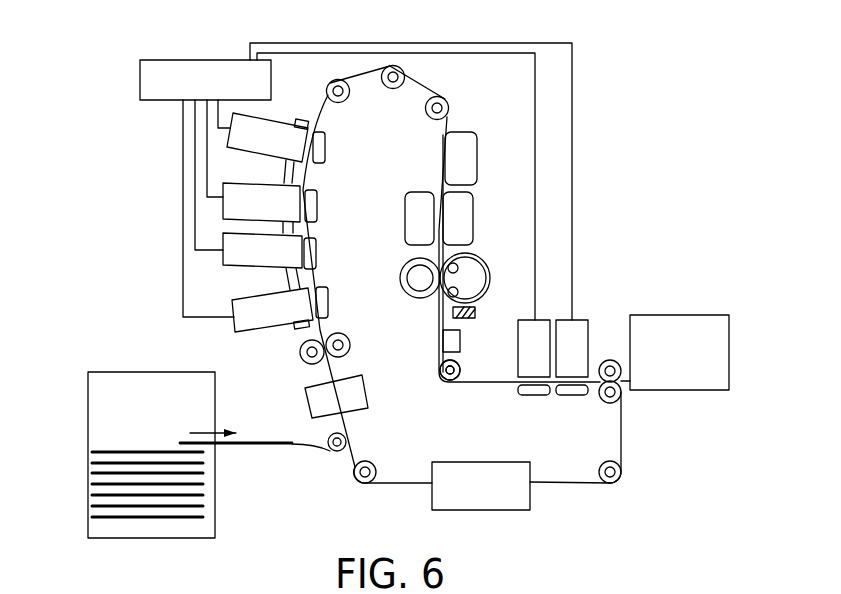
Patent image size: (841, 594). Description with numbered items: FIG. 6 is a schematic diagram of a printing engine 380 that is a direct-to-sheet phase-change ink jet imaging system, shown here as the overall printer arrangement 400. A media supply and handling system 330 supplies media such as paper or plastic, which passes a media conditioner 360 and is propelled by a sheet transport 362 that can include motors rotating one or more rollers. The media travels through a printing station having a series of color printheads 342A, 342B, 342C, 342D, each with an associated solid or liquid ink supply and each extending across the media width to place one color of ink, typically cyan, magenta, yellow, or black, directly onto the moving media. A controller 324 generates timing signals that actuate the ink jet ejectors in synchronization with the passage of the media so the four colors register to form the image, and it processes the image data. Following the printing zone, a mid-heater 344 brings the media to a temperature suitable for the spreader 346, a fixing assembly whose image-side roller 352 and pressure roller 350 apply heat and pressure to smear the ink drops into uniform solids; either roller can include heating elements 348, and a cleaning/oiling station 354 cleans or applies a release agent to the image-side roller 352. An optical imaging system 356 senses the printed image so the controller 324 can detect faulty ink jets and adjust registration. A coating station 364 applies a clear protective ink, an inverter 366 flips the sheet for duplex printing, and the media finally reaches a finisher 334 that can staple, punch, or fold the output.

The controller 324 is at (198, 60).
The media supply and handling system 330 is at (122, 372).
The finisher 334 is at (677, 315).
The printhead 342A is at (235, 325).
The printhead 342B is at (223, 264).
The printhead 342C is at (223, 213).
The printhead 342D is at (230, 134).
The mid-heater 344 is at (406, 211).
The spreader 346 is at (497, 246).
The heating elements 348 is at (458, 291).
The pressure roller 350 is at (397, 299).
The image-side roller 352 is at (498, 293).
The cleaning/oiling station 354 is at (465, 320).
The optical imaging system 356 is at (442, 334).
The media conditioner 360 is at (305, 396).
The sheet transport 362 is at (432, 362).
The coating station 364 is at (585, 312).
The inverter 366 is at (531, 487).
The printing engine 380 is at (136, 206).
The printer 400 is at (320, 330).